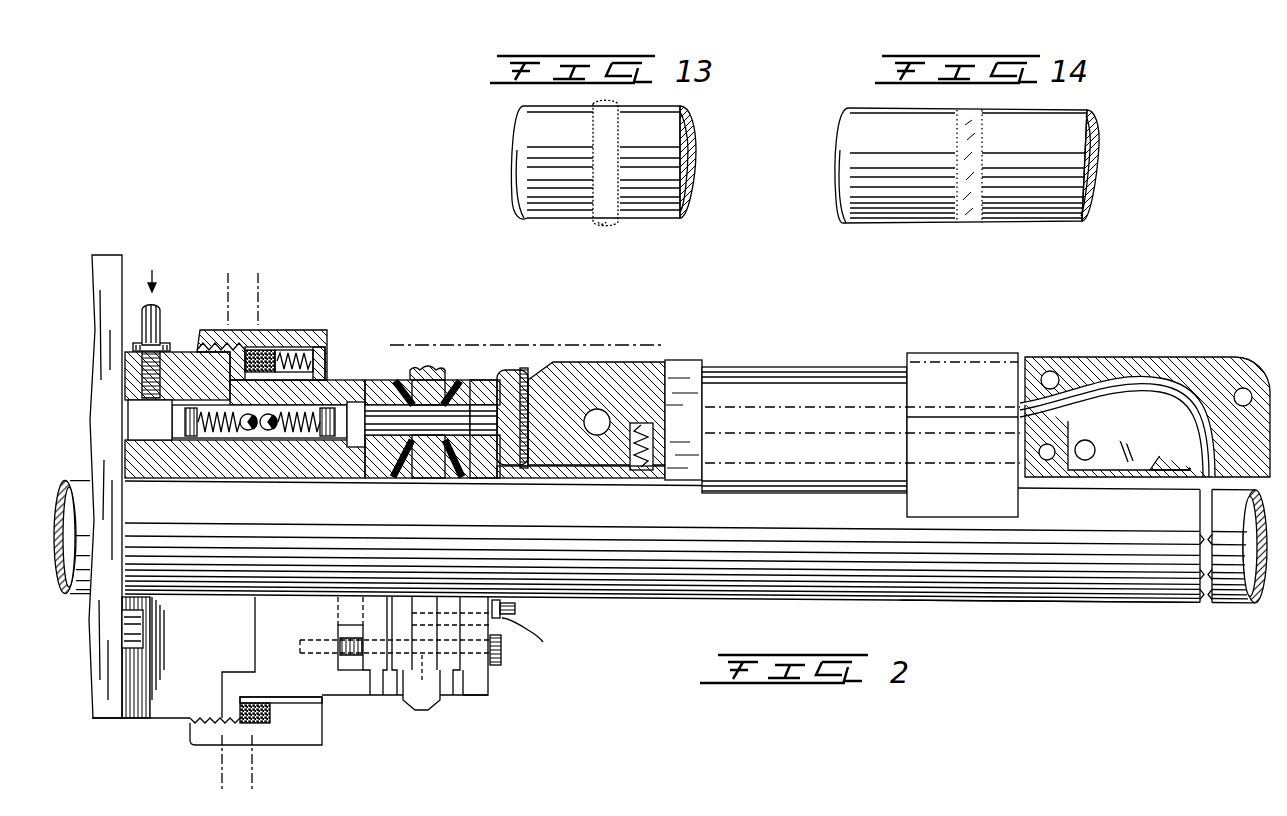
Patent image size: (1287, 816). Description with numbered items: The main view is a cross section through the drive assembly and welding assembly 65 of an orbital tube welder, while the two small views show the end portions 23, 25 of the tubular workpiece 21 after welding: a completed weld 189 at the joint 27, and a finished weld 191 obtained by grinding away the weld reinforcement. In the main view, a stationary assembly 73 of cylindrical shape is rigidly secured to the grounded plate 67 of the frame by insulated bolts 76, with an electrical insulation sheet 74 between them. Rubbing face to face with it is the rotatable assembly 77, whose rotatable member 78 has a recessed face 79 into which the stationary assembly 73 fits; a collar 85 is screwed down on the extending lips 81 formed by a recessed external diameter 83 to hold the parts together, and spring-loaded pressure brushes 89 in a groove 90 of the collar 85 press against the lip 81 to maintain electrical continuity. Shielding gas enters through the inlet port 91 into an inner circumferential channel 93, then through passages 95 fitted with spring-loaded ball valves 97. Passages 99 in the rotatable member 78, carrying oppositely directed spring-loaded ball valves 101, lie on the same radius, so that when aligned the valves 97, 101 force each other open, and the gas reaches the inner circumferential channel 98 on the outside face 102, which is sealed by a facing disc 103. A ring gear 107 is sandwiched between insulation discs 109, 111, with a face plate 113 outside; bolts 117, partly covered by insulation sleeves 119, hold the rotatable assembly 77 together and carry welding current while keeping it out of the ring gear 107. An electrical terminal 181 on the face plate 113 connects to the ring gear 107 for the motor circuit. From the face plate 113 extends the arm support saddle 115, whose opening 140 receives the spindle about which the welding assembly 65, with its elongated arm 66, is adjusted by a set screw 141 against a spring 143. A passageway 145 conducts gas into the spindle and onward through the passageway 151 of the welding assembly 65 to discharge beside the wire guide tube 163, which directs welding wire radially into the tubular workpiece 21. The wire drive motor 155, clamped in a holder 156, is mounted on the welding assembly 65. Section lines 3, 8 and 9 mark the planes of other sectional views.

In FIG. 13, the tubular workpiece 21 is at (696, 140).
In FIG. 14, the tubular workpiece 21 is at (1097, 140).
In FIG. 2, the tubular workpiece 21 is at (660, 570).
In FIG. 2, the end portion 23 is at (1052, 595).
In FIG. 2, the end portion 25 is at (1240, 596).
In FIG. 13, the joint 27 is at (615, 104).
In FIG. 2, the joint 27 is at (1205, 595).
In FIG. 13, the completed weld 189 is at (600, 226).
In FIG. 14, the finished weld 191 is at (970, 226).
In FIG. 2, the section line 3- 3 is at (397, 343).
In FIG. 2, the section line 8- 8 is at (228, 273).
In FIG. 2, the section line 9- 9 is at (258, 273).
In FIG. 2, the welding assembly 65 is at (860, 414).
In FIG. 2, the elongated arm 66 is at (690, 368).
In FIG. 2, the plate 67 is at (100, 720).
In FIG. 2, the stationary assembly 73 is at (144, 725).
In FIG. 2, the electrical insulation sheet 74 is at (118, 256).
In FIG. 2, the insulated bolts 76 is at (146, 630).
In FIG. 2, the rotatable assembly 77 is at (371, 380).
In FIG. 2, the rotatable member 78 is at (345, 697).
In FIG. 2, the recessed face 79 is at (257, 634).
In FIG. 2, the extending lips 81 is at (233, 707).
In FIG. 2, the recessed external diameter 83 is at (280, 697).
In FIG. 2, the collar 85 is at (313, 746).
In FIG. 2, the spring-loaded pressure brushes 89 is at (262, 350).
In FIG. 2, the groove 90 is at (305, 350).
In FIG. 2, the inlet port 91 is at (158, 312).
In FIG. 2, the inner circumferential channel 93 is at (130, 418).
In FIG. 2, the passages 95 is at (215, 440).
In FIG. 2, the spring-loaded ball valve 97 is at (246, 431).
In FIG. 2, the inner circumferential channel 98 is at (357, 448).
In FIG. 2, the passages 99 is at (297, 440).
In FIG. 2, the spring-loaded ball valves 101 is at (268, 431).
In FIG. 2, the outside face 102 is at (380, 688).
In FIG. 2, the facing disc 103 is at (390, 384).
In FIG. 2, the ring gear 107 is at (428, 712).
In FIG. 2, the insulation disc 109 is at (425, 476).
In FIG. 2, the insulation disc 111 is at (453, 697).
In FIG. 2, the face plate 113 is at (489, 697).
In FIG. 2, the arm support saddle 115 is at (540, 480).
In FIG. 2, the bolts 117 is at (502, 665).
In FIG. 2, the insulation sleeves 119 is at (424, 647).
In FIG. 2, the opening 140 is at (597, 436).
In FIG. 2, the set screw 141 is at (529, 380).
In FIG. 2, the spring 143 is at (690, 432).
In FIG. 2, the passageway 145 is at (479, 406).
In FIG. 2, the passageway 151 is at (985, 408).
In FIG. 2, the wire drive motor 155 is at (745, 388).
In FIG. 2, the holder 156 is at (931, 370).
In FIG. 2, the wire guide tube 163 is at (1100, 388).
In FIG. 2, the electrical terminal 181 is at (520, 607).